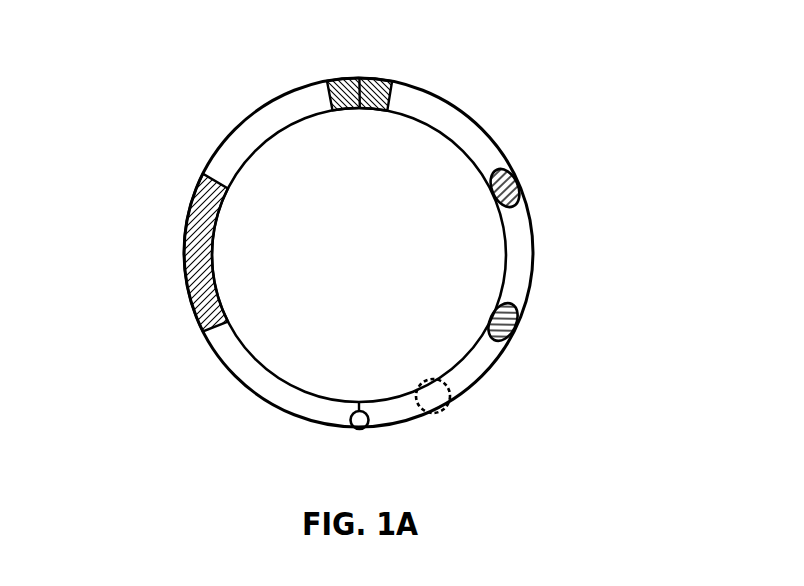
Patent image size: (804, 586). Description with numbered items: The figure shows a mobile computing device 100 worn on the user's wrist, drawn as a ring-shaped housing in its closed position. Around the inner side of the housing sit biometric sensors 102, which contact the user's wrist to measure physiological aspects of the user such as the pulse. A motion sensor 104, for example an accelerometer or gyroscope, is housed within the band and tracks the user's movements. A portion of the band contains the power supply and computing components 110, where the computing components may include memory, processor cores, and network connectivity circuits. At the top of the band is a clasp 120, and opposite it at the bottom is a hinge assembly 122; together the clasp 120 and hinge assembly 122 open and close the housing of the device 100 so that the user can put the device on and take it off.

The device 100 is at (208, 52).
The biometric sensors 102 is at (508, 312).
The motion sensor 104 is at (433, 397).
The power supply and computing components 110 is at (187, 263).
The clasp 120 is at (381, 95).
The hinge assembly 122 is at (359, 421).